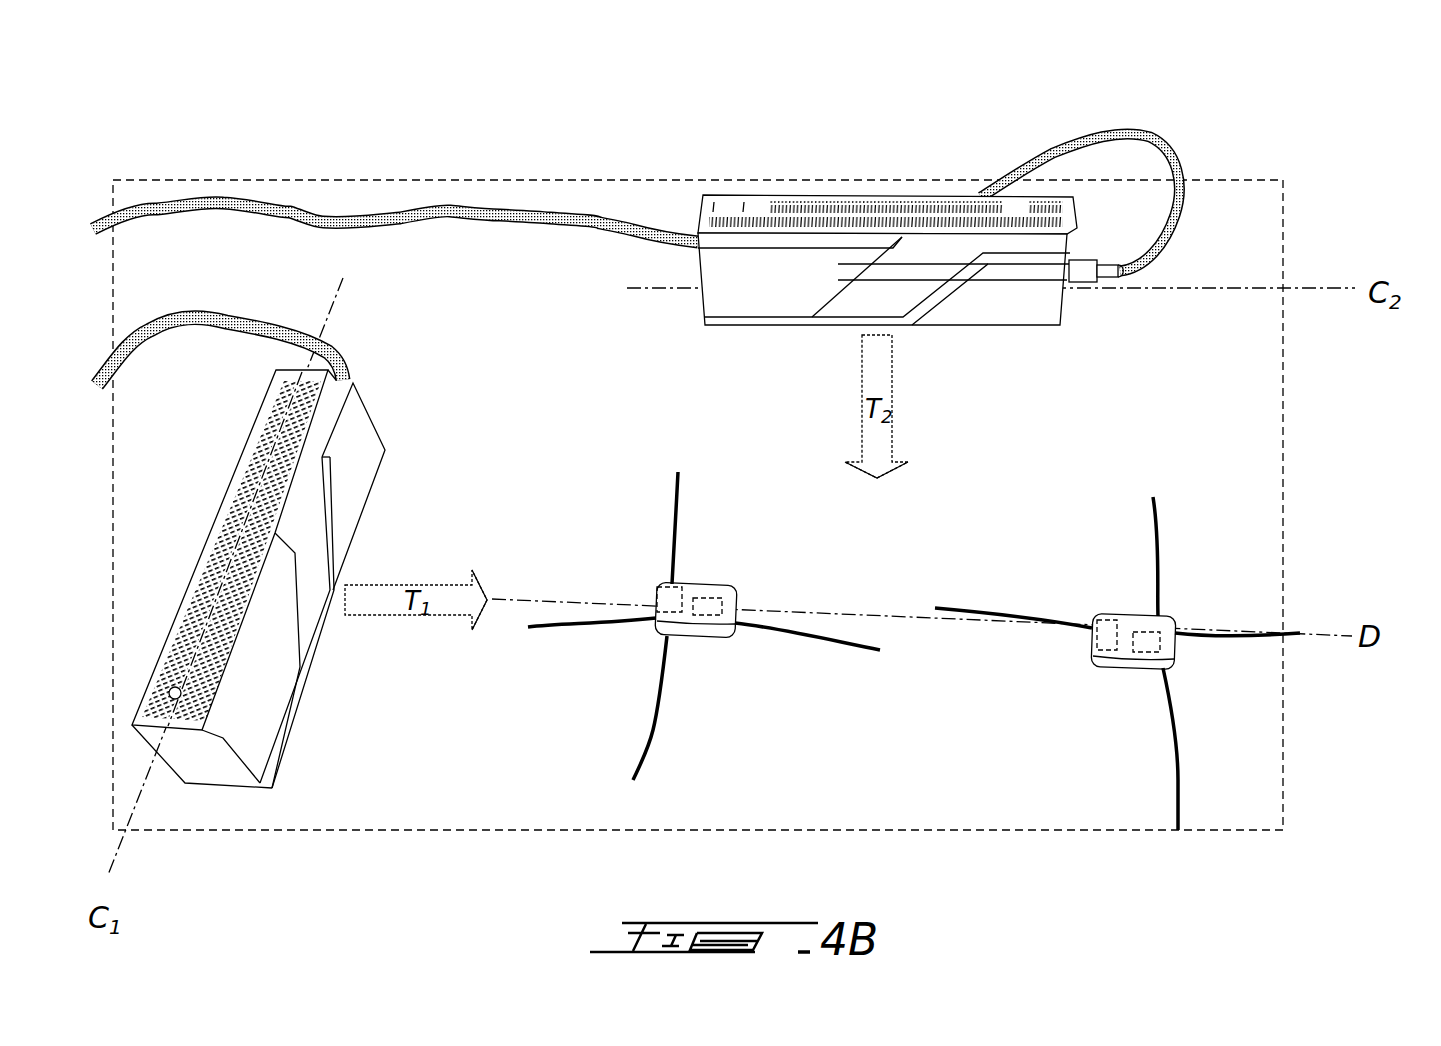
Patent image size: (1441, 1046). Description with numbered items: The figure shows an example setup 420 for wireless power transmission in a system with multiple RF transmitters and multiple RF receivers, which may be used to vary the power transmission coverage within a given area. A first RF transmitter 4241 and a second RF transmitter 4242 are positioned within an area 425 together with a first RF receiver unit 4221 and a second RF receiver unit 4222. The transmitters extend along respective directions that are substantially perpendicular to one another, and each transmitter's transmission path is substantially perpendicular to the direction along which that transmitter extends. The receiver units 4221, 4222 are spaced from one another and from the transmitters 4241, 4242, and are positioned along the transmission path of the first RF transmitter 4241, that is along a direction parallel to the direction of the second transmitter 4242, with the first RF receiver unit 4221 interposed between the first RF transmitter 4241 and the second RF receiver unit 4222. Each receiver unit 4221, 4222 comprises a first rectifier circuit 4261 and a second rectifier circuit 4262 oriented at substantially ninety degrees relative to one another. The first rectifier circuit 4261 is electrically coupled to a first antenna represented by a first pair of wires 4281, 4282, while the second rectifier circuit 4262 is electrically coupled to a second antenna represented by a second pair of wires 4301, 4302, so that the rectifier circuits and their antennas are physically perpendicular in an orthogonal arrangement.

The setup 420 is at (1287, 128).
The area 425 is at (487, 204).
The first RF transmitter 4241 is at (372, 396).
The second RF transmitter 4242 is at (1000, 338).
The first RF receiver unit 4221 is at (715, 572).
The second RF receiver unit 4222 is at (1190, 592).
The first rectifier circuit 4261 is at (657, 588).
The second rectifier circuit 4262 is at (706, 618).
The first wire of first pair of wires 4281 is at (676, 490).
The second wire of first pair of wires 4282 is at (648, 745).
The first wire of second pair of wires 4301 is at (553, 629).
The second wire of second pair of wires 4302 is at (832, 650).